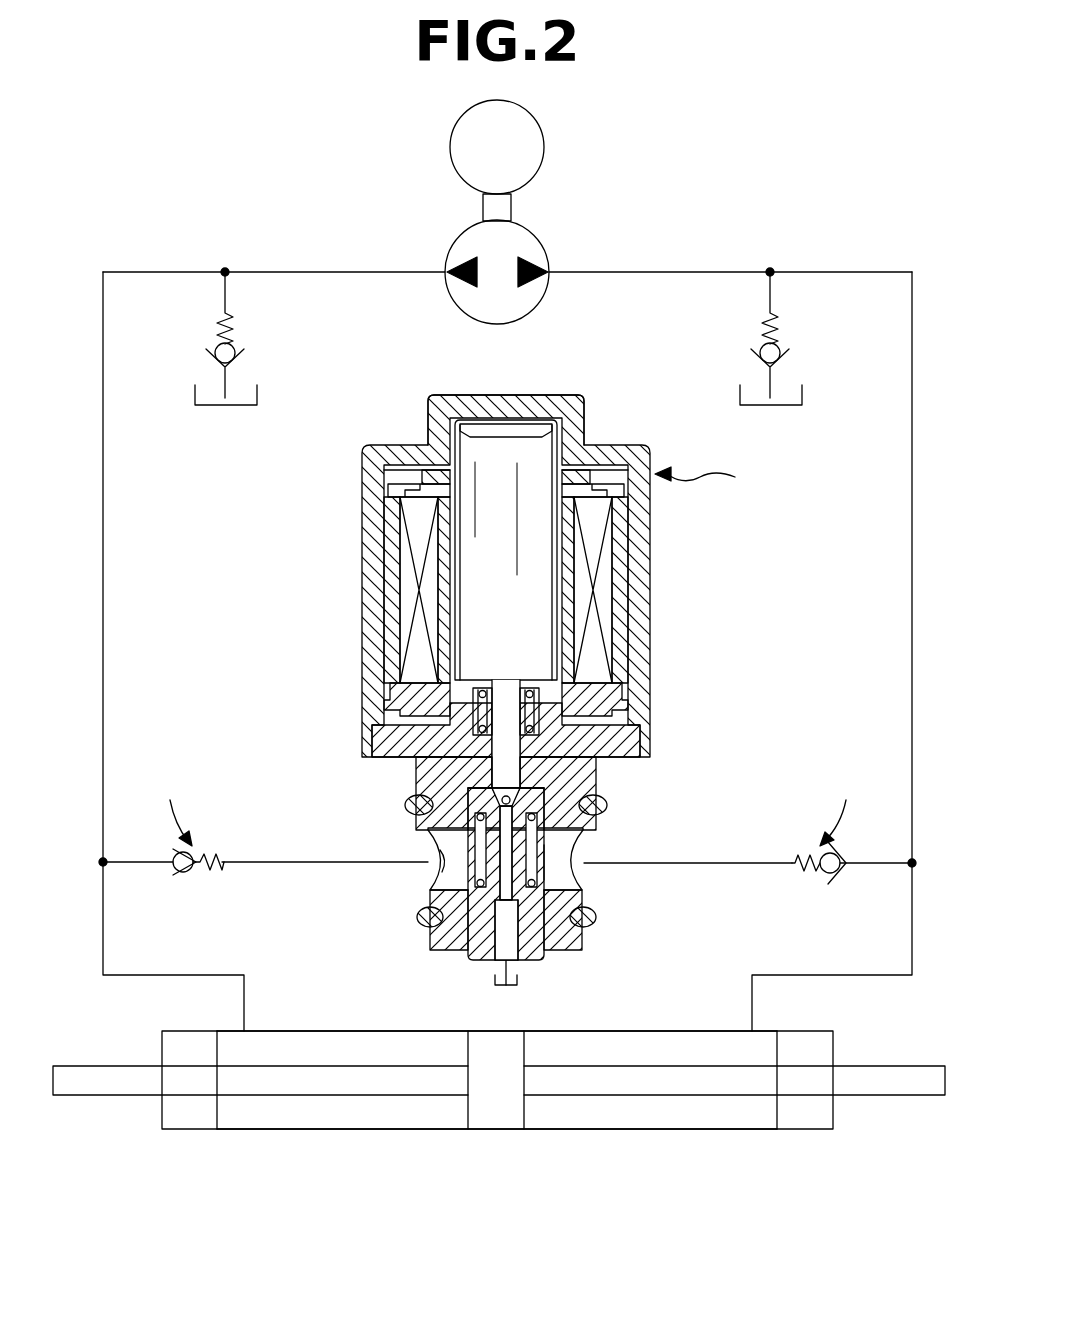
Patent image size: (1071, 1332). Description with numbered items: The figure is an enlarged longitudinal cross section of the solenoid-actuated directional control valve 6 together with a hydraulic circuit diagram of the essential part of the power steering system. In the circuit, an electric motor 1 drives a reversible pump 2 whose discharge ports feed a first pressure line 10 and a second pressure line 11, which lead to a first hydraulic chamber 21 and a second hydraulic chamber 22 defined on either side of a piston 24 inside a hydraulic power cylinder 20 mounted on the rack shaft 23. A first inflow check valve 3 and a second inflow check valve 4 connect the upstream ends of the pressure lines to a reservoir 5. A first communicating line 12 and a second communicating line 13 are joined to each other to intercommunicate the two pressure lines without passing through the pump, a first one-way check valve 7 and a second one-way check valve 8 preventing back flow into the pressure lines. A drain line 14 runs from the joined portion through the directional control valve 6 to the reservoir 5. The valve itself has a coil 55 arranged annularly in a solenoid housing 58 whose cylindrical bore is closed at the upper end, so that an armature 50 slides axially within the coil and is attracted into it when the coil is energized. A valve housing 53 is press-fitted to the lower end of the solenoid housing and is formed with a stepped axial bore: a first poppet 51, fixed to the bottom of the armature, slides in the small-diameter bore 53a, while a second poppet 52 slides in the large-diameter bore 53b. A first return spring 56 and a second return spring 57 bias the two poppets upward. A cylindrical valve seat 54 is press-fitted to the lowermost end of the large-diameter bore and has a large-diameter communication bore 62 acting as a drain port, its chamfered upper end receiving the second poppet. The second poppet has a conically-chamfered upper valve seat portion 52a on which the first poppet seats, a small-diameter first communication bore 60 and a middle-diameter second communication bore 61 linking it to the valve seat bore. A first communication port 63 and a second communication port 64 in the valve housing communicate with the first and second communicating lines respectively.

The electric motor 1 is at (451, 152).
The reversible pump 2 is at (535, 316).
The first inflow check valve 3 is at (781, 351).
The second inflow check valve 4 is at (236, 351).
The reservoir 5 is at (237, 407).
The directional control valve 6 is at (560, 576).
The first one-way check valve 7 is at (827, 826).
The second one-way check valve 8 is at (189, 821).
The first pressure line 10 is at (910, 515).
The second pressure line 11 is at (105, 548).
The first communicating line 12 is at (735, 861).
The second communicating line 13 is at (258, 861).
The drain line 14 is at (503, 967).
The hydraulic power cylinder 20 is at (757, 1130).
The first hydraulic chamber 21 is at (690, 1116).
The second hydraulic chamber 22 is at (345, 1131).
The rack shaft 23 is at (920, 1066).
The piston 24 is at (500, 1116).
The armature 50 is at (523, 572).
The first poppet 51 is at (537, 708).
The second poppet 52 is at (533, 813).
The upper valve seat portion 52a is at (523, 797).
The valve housing 53 is at (628, 742).
The small-diameter bore 53a is at (505, 766).
The large-diameter bore 53b is at (483, 905).
The valve seat 54 is at (537, 938).
The coil 55 is at (598, 518).
The first return spring 56 is at (508, 704).
The second return spring 57 is at (540, 857).
The solenoid housing 58 is at (594, 445).
The first communication bore 60 is at (503, 812).
The second communication bore 61 is at (503, 860).
The communication bore 62 is at (500, 932).
The first communication port 63 is at (560, 872).
The second communication port 64 is at (443, 877).